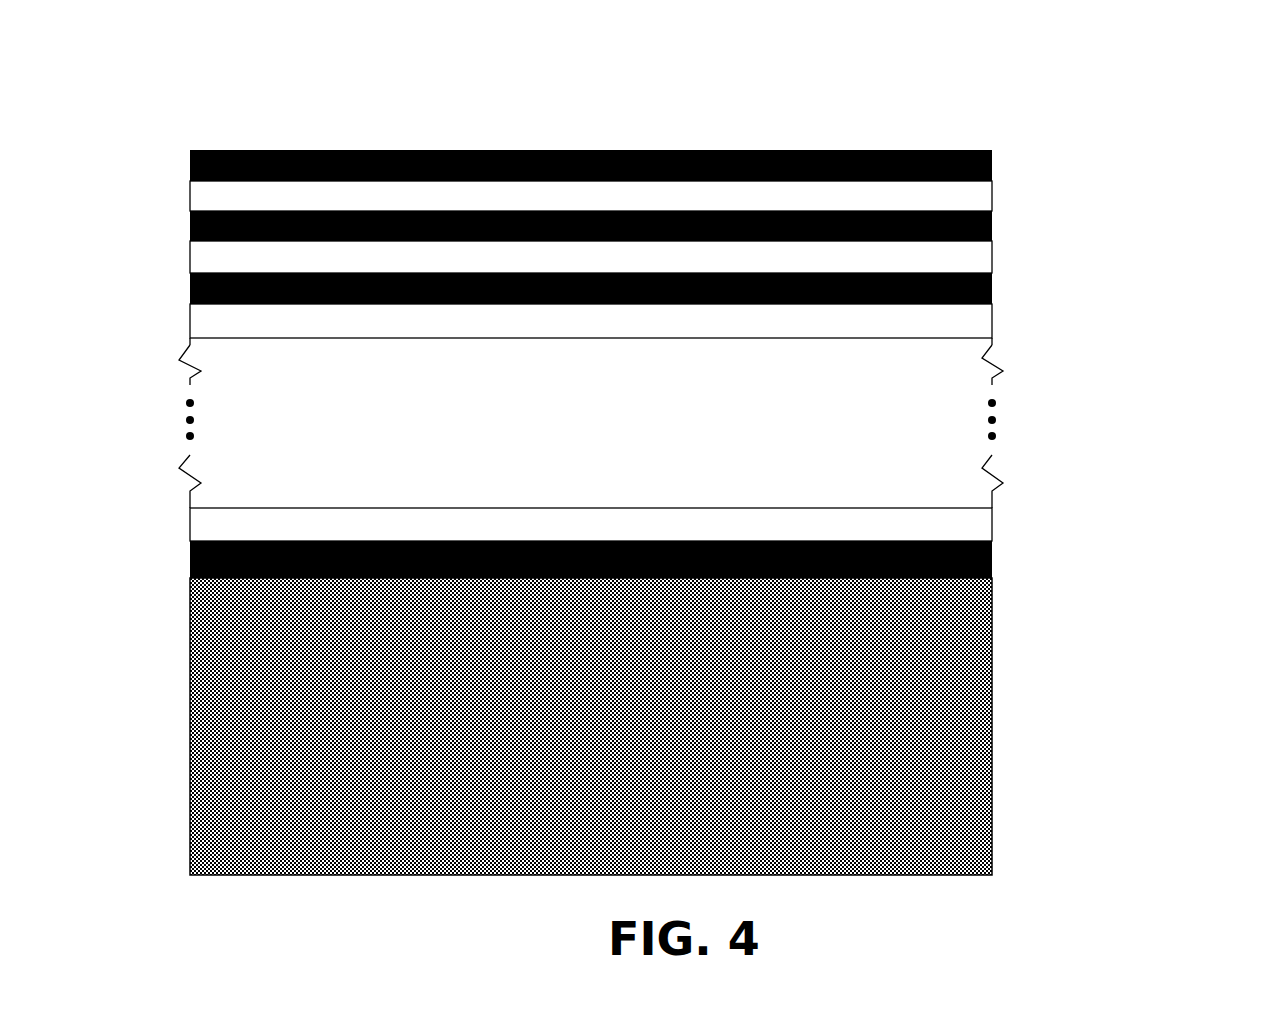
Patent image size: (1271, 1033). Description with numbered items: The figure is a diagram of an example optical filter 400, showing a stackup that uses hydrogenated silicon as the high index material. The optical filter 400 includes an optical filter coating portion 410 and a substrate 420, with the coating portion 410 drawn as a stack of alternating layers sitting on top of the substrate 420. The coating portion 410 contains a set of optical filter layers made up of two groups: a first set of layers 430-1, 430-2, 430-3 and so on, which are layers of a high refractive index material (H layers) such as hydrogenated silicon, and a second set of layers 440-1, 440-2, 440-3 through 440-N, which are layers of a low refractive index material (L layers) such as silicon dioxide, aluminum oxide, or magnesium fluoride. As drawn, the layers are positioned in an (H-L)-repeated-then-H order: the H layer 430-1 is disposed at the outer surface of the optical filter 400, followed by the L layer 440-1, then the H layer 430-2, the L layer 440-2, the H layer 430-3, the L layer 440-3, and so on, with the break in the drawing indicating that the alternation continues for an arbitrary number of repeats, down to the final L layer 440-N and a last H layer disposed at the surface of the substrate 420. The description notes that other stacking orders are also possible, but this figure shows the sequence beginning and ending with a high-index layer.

The optical filter 400 is at (152, 49).
The optical filter coating portion 410 is at (1138, 123).
The substrate 420 is at (601, 727).
The first layer of first set of layers 430-1 is at (1073, 170).
The second layer of first set of layers 430-2 is at (1073, 230).
The third layer of first set of layers 430-3 is at (1073, 293).
The first layer of second set of layers 440-1 is at (181, 189).
The second layer of second set of layers 440-2 is at (181, 250).
The third layer of second set of layers 440-3 is at (181, 314).
The Nth layer of second set of layers 440-N is at (181, 519).